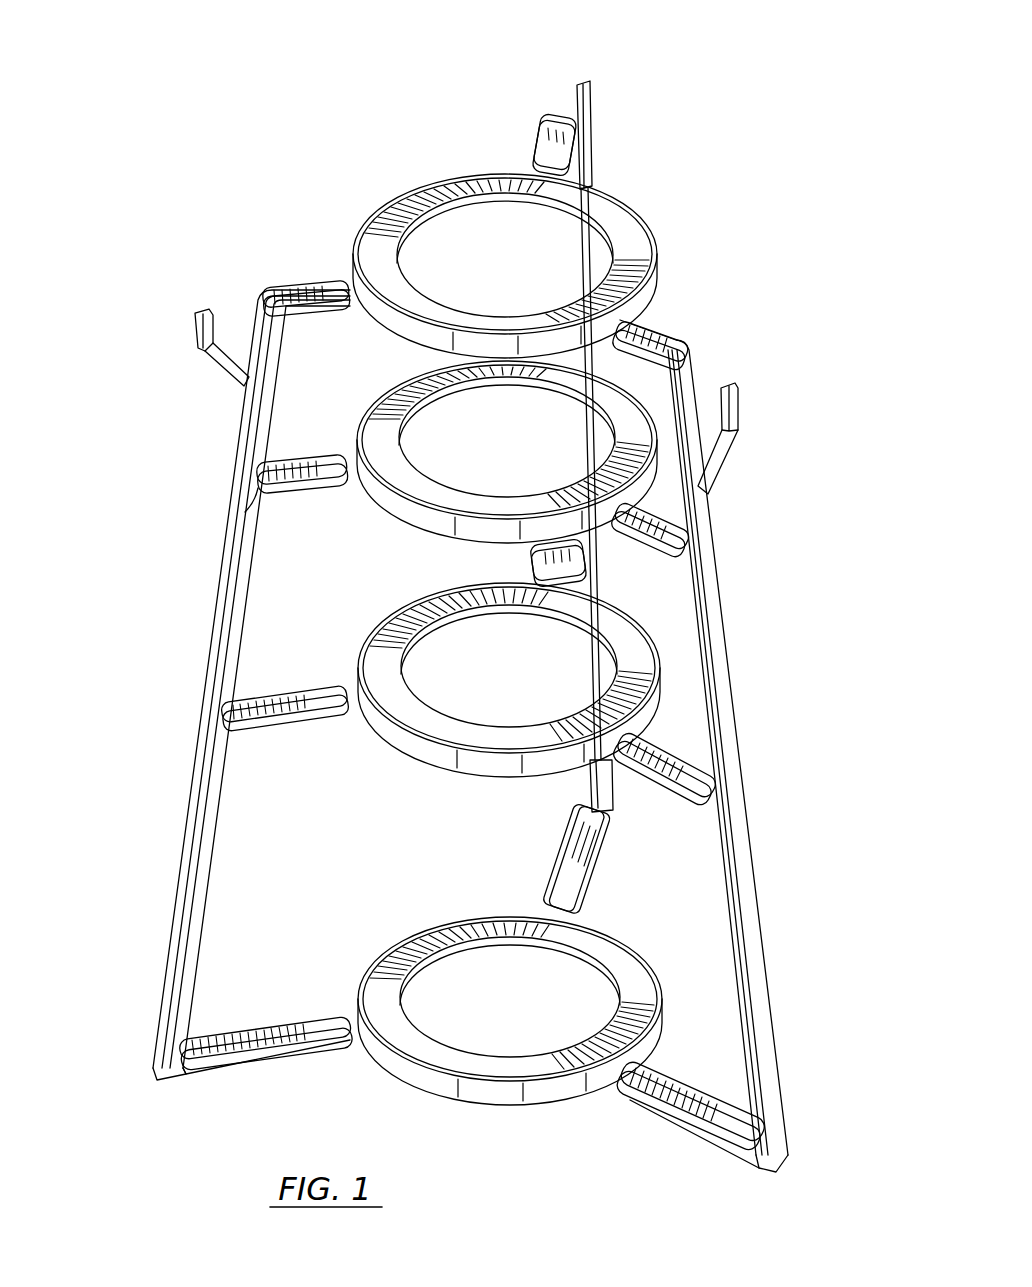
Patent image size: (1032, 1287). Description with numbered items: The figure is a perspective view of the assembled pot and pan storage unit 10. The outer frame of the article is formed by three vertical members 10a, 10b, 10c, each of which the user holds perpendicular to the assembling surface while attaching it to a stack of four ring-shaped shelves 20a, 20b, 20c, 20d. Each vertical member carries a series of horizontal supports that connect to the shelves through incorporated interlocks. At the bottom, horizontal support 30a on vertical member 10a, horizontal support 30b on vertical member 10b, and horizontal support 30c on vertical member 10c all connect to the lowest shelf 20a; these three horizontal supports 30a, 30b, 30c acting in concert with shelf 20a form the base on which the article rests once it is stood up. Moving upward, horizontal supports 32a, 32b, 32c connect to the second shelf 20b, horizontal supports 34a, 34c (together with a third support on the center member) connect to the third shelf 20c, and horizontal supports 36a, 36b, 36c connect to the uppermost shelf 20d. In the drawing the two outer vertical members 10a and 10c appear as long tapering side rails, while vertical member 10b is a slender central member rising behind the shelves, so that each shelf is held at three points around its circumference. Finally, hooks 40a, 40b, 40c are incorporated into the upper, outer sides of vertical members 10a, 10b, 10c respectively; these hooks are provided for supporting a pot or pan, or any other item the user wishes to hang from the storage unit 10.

The pot and pan storage unit 10 is at (762, 143).
The vertical member 10a is at (720, 668).
The vertical member 10b is at (592, 564).
The vertical member 10c is at (213, 604).
The shelf 20a is at (473, 1072).
The shelf 20b is at (437, 724).
The shelf 20c is at (380, 506).
The shelf 20d is at (427, 203).
The horizontal support 30a is at (665, 1092).
The horizontal support 30b is at (548, 880).
The horizontal support 30c is at (238, 1042).
The horizontal support 32a is at (677, 790).
The horizontal support 32b is at (545, 550).
The horizontal support 32c is at (255, 708).
The horizontal support 34a is at (660, 530).
The horizontal support 34c is at (307, 470).
The horizontal support 36a is at (680, 338).
The horizontal support 36b is at (567, 140).
The horizontal support 36c is at (287, 290).
The hook 40a is at (738, 386).
The hook 40b is at (591, 84).
The hook 40c is at (198, 314).